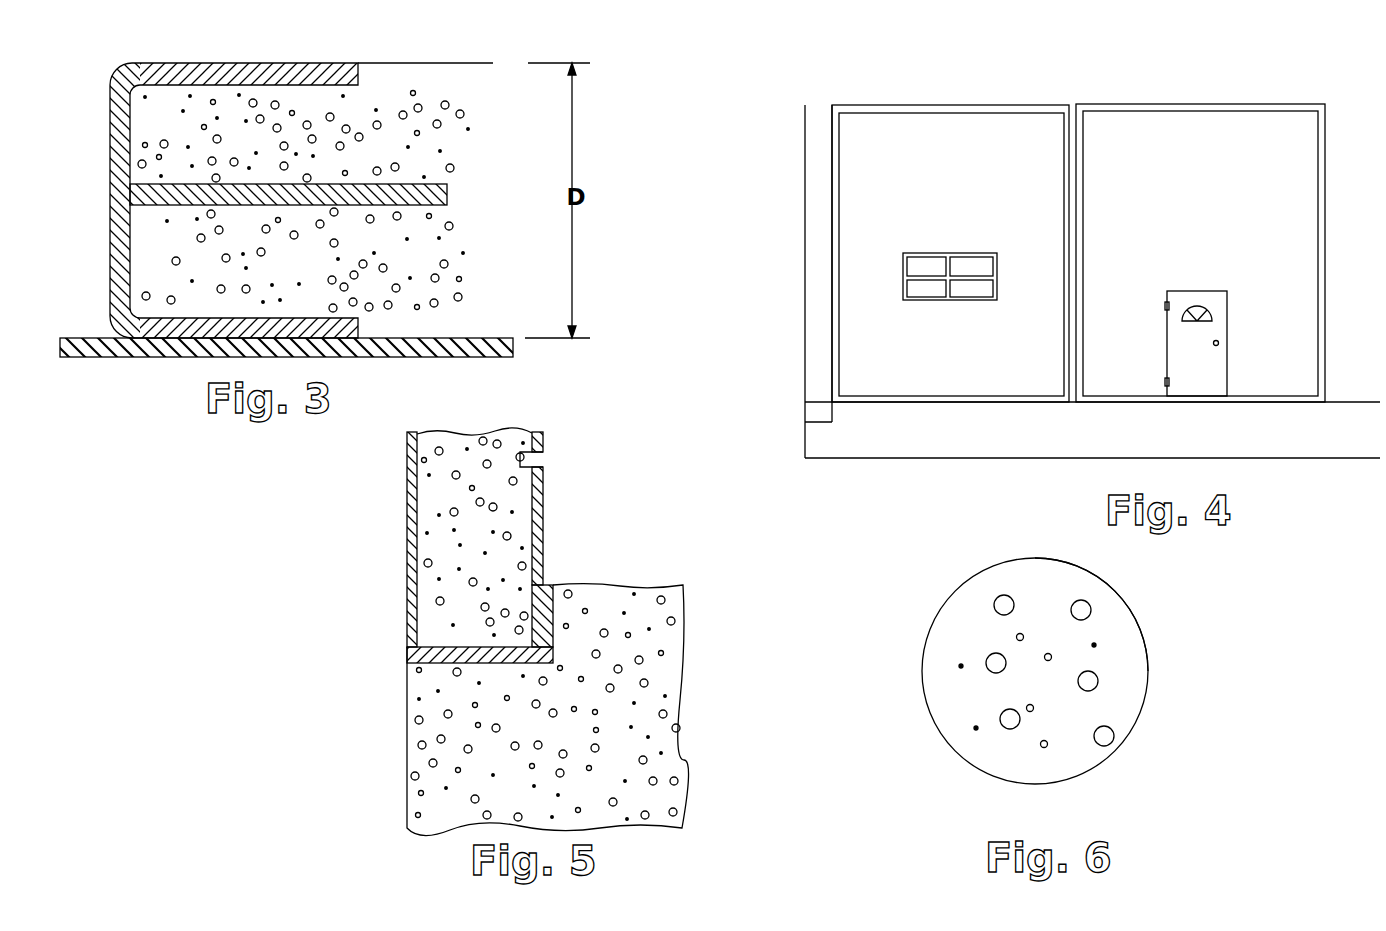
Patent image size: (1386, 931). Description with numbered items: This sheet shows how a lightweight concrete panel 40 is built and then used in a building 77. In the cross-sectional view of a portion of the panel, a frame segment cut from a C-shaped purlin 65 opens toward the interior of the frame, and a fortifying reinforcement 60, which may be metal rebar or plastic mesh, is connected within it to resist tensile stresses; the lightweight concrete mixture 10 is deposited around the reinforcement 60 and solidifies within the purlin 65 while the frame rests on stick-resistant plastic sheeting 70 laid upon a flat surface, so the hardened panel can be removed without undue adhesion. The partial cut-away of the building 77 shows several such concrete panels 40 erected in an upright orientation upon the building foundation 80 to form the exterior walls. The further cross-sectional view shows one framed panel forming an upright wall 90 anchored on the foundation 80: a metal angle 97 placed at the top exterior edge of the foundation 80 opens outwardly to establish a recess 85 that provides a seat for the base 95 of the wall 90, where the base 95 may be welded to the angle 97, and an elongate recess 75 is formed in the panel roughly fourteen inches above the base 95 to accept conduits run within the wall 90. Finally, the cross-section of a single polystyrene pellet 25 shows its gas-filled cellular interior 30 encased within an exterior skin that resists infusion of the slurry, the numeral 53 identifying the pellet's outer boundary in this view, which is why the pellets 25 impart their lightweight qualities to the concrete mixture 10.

In FIG. 3, the lightweight concrete mixture 10 is at (437, 113).
In FIG. 3, the fortifying reinforcement 60 is at (445, 196).
In FIG. 3, the C-shaped purlin 65 is at (258, 68).
In FIG. 3, the plastic sheeting 70 is at (514, 344).
In FIG. 4, the concrete panel 40 is at (797, 195).
In FIG. 4, the building 77 is at (770, 306).
In FIG. 4, the building foundation 80 is at (1124, 437).
In FIG. 5, the elongate recess 75 is at (546, 461).
In FIG. 5, the recess 85 is at (453, 539).
In FIG. 5, the upright wall 90 is at (508, 540).
In FIG. 5, the base 95 is at (429, 656).
In FIG. 5, the metal angle 97 is at (410, 659).
In FIG. 6, the gas-filled cellular interior 30 is at (1117, 638).
In FIG. 6, the outer shell 53 is at (924, 712).
In FIG. 6, the polystyrene pellet 25 is at (1145, 741).